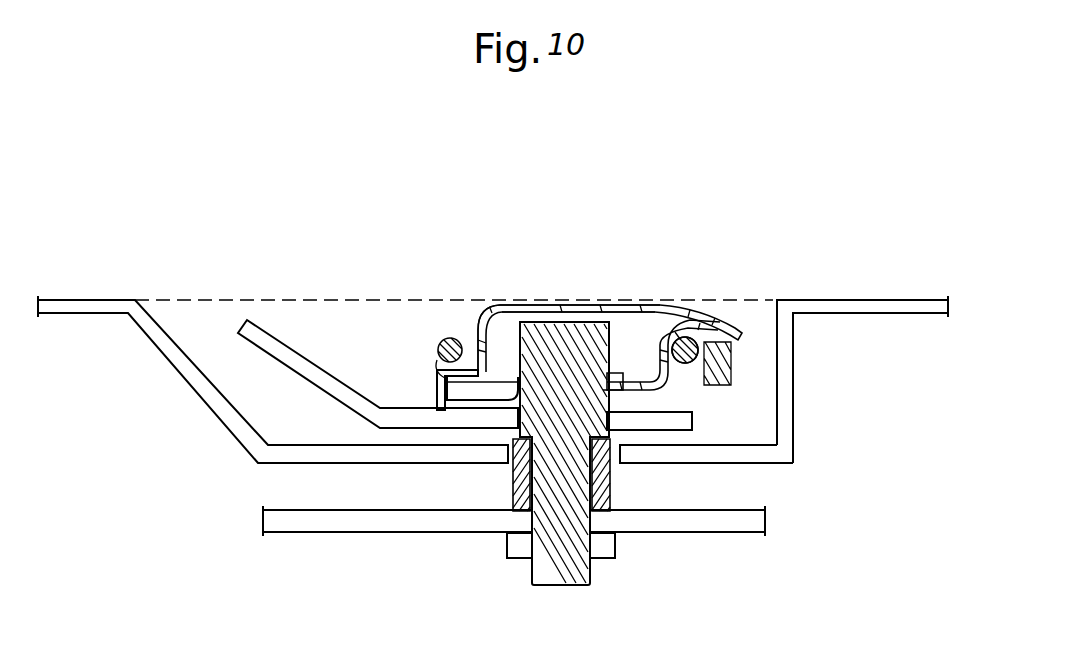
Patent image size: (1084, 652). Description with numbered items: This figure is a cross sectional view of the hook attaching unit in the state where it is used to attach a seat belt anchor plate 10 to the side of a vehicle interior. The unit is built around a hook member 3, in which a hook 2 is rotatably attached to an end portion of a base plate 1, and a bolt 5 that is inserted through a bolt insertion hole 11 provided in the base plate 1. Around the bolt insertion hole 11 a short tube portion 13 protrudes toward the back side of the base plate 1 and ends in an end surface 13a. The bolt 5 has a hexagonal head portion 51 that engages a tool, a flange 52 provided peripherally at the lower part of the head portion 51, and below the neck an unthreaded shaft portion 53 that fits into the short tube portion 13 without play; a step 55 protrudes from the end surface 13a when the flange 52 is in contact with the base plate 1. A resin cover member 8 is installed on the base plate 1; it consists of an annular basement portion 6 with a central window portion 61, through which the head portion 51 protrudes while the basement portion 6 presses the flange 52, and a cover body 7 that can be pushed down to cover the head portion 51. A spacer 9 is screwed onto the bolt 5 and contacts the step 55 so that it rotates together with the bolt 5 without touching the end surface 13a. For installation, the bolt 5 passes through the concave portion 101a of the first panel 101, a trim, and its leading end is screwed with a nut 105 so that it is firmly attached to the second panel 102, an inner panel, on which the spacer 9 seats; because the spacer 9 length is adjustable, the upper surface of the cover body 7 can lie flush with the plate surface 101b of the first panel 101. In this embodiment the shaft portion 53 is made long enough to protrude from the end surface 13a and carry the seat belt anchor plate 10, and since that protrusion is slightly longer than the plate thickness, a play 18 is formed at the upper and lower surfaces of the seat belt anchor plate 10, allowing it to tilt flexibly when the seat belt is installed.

The base plate 1 is at (437, 372).
The hook 2 is at (452, 337).
The hook member 3 is at (433, 397).
The bolt 5 is at (562, 315).
The annular basement portion 6 is at (440, 360).
The cover body 7 is at (650, 330).
The cover member 8 is at (605, 305).
The spacer 9 is at (517, 430).
The seat belt anchor plate 10 is at (307, 368).
The bolt insertion hole 11 is at (530, 325).
The short tube portion 13 is at (497, 397).
The end surface 13a is at (645, 437).
The play 18 is at (505, 413).
The head portion 51 is at (578, 340).
The flange 52 is at (488, 318).
The shaft portion 53 is at (617, 408).
The step 55 is at (580, 405).
The window portion 61 is at (675, 338).
The first panel 101 is at (742, 458).
The concave portion 101a is at (222, 343).
The plate surface 101b is at (850, 300).
The second panel 102 is at (728, 527).
The nut 105 is at (617, 548).